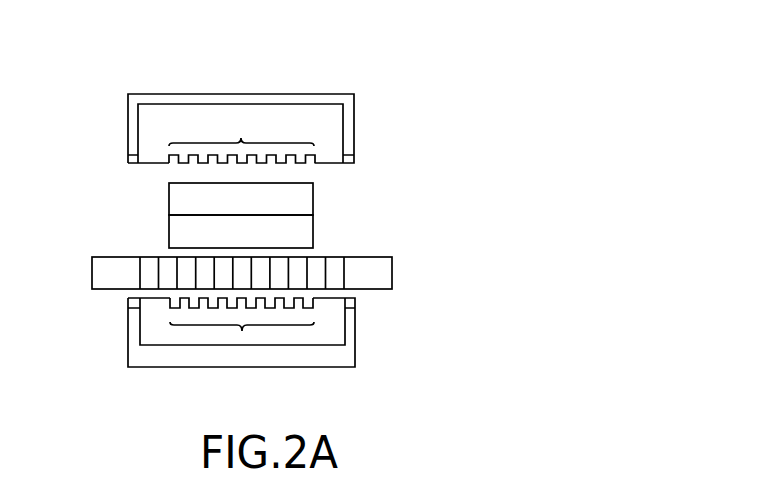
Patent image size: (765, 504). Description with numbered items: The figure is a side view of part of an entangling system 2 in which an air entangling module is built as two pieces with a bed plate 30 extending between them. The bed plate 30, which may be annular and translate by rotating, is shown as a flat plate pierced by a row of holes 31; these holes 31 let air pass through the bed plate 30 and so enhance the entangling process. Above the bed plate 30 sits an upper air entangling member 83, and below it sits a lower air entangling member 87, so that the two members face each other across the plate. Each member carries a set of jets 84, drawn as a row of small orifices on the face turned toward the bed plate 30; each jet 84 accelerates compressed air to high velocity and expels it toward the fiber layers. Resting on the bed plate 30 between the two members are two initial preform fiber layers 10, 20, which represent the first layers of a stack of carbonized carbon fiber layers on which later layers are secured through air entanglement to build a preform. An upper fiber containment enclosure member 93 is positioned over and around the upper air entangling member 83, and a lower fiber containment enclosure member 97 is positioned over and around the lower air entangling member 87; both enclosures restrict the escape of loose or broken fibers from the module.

The entangling system 2 is at (321, 54).
The upper fiber containment enclosure member 93 is at (128, 108).
The upper air entangling member 83 is at (343, 130).
The jets 84 is at (241, 238).
The first substrate 10 is at (313, 197).
The second substrate 20 is at (313, 231).
The bed plate 30 is at (392, 268).
The holes 31 is at (222, 270).
The lower air entangling member 87 is at (345, 321).
The lower fiber containment enclosure member 97 is at (355, 365).